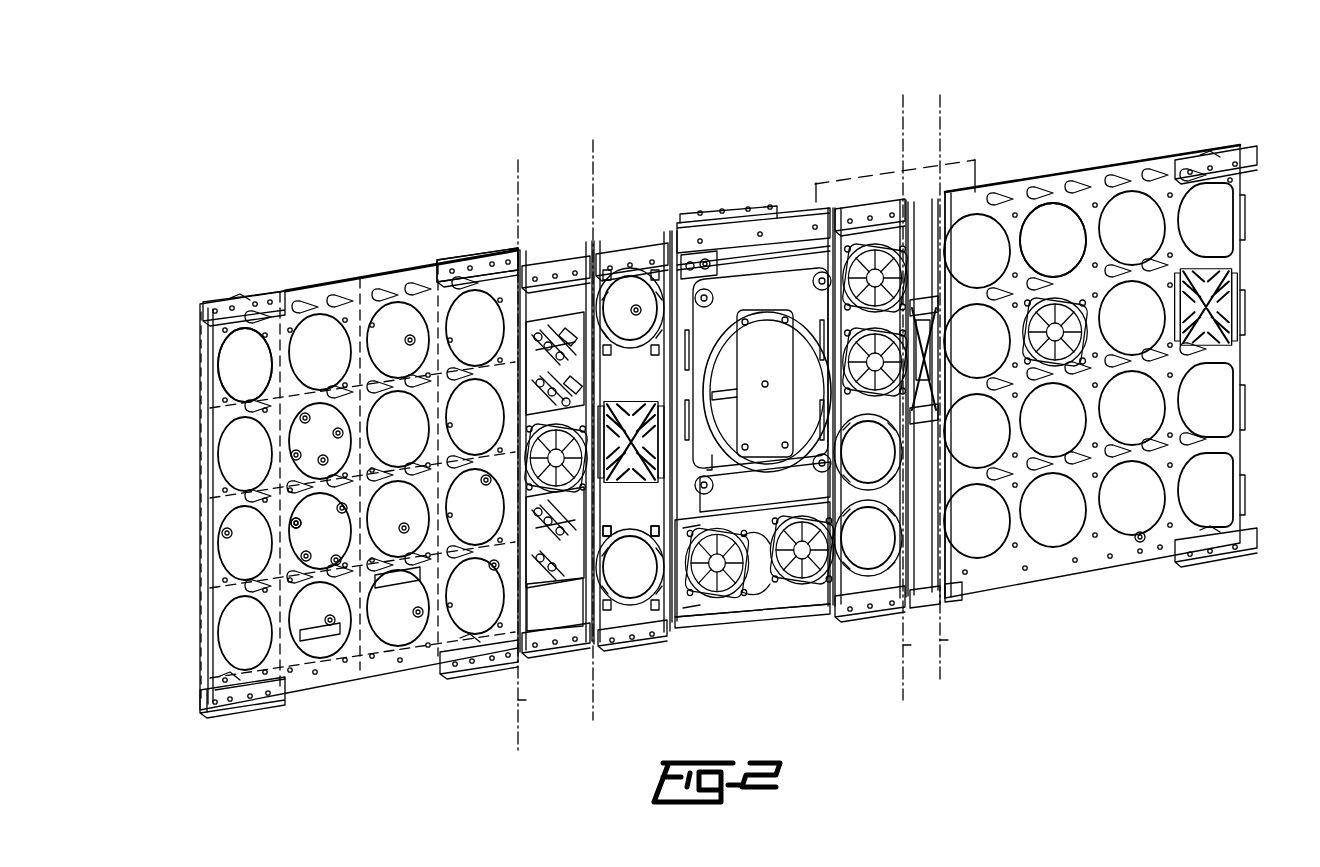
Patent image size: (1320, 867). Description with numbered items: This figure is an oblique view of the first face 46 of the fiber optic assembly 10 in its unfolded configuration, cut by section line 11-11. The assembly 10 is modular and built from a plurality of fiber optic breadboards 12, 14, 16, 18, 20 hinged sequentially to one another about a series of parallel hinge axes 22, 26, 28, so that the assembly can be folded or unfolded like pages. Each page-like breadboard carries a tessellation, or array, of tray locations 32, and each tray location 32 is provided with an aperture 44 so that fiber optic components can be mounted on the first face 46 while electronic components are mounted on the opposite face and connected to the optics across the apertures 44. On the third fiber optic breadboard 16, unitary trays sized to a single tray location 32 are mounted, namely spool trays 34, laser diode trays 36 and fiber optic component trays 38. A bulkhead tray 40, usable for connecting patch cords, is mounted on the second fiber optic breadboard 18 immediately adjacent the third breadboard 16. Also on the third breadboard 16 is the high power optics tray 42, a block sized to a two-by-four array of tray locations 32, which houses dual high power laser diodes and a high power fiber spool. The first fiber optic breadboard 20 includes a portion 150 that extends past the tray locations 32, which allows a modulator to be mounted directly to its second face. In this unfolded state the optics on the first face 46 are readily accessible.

The fiber optic assembly 10 is at (1206, 106).
The section line 11-11 is at (850, 178).
The fiber optic breadboard 12 is at (1112, 572).
The fiber optic breadboard 14 is at (887, 423).
The third fiber optic breadboard 16 is at (745, 615).
The second fiber optic breadboard 18 is at (552, 650).
The first fiber optic breadboard 20 is at (370, 668).
The hinge axis 22 is at (940, 640).
The hinge axis 26 is at (600, 686).
The hinge axis 28 is at (522, 702).
The tray locations 32 is at (243, 550).
The spool tray 34 is at (656, 642).
The laser diode tray 36 is at (1072, 325).
The fiber optic component tray 38 is at (633, 268).
The bulkhead tray 40 is at (568, 330).
The high power optics tray 42 is at (765, 265).
The apertures 44 is at (300, 548).
The first face 46 is at (440, 285).
The portion of the fiber optic breadboard 150 is at (326, 680).